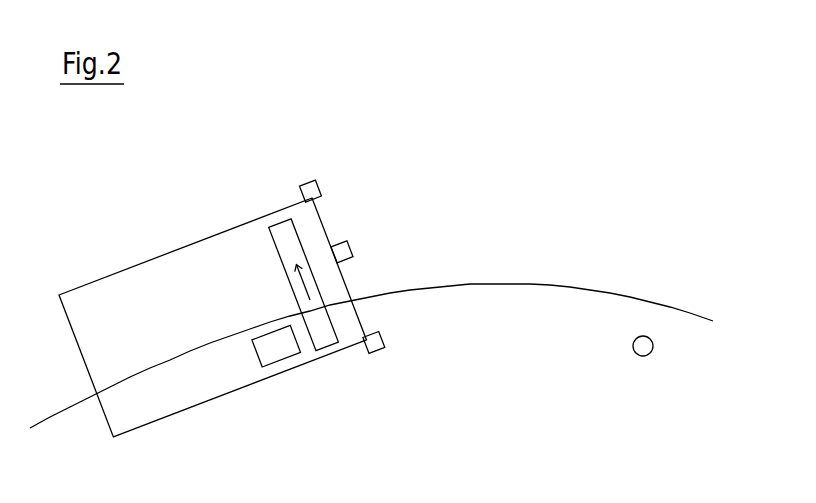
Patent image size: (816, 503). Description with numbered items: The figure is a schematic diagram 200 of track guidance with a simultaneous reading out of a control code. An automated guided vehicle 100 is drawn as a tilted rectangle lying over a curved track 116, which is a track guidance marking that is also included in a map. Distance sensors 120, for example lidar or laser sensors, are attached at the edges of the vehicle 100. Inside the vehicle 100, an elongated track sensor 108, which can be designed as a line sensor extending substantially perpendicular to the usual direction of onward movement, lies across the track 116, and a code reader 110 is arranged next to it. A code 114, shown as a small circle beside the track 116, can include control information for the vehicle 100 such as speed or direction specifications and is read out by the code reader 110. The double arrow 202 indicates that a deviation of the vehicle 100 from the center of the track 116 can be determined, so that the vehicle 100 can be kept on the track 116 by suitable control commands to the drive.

The schematic diagram 200 is at (637, 45).
The automated guided vehicle 100 is at (203, 239).
The track sensor 108 is at (290, 253).
The double arrow 202 is at (292, 290).
The code reader 110 is at (265, 353).
The distance sensor 120 is at (309, 183).
The track 116 is at (593, 291).
The code 114 is at (654, 346).